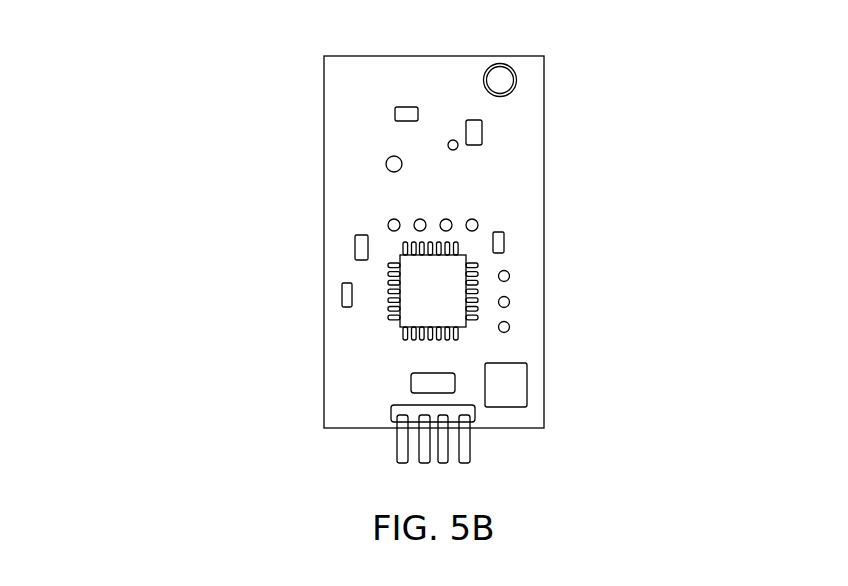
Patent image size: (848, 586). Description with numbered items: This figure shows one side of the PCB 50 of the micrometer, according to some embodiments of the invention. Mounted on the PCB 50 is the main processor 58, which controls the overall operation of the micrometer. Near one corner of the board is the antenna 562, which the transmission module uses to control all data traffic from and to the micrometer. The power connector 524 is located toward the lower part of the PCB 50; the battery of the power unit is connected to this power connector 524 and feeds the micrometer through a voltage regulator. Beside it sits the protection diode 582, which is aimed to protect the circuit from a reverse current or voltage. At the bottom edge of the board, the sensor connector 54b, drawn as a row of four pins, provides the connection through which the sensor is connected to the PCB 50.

The PCB 50 is at (575, 172).
The main processor 58 is at (445, 299).
The antenna 562 is at (516, 76).
The protection diode 582 is at (437, 383).
The power connector 524 is at (497, 387).
The sensor connector 54b is at (465, 443).